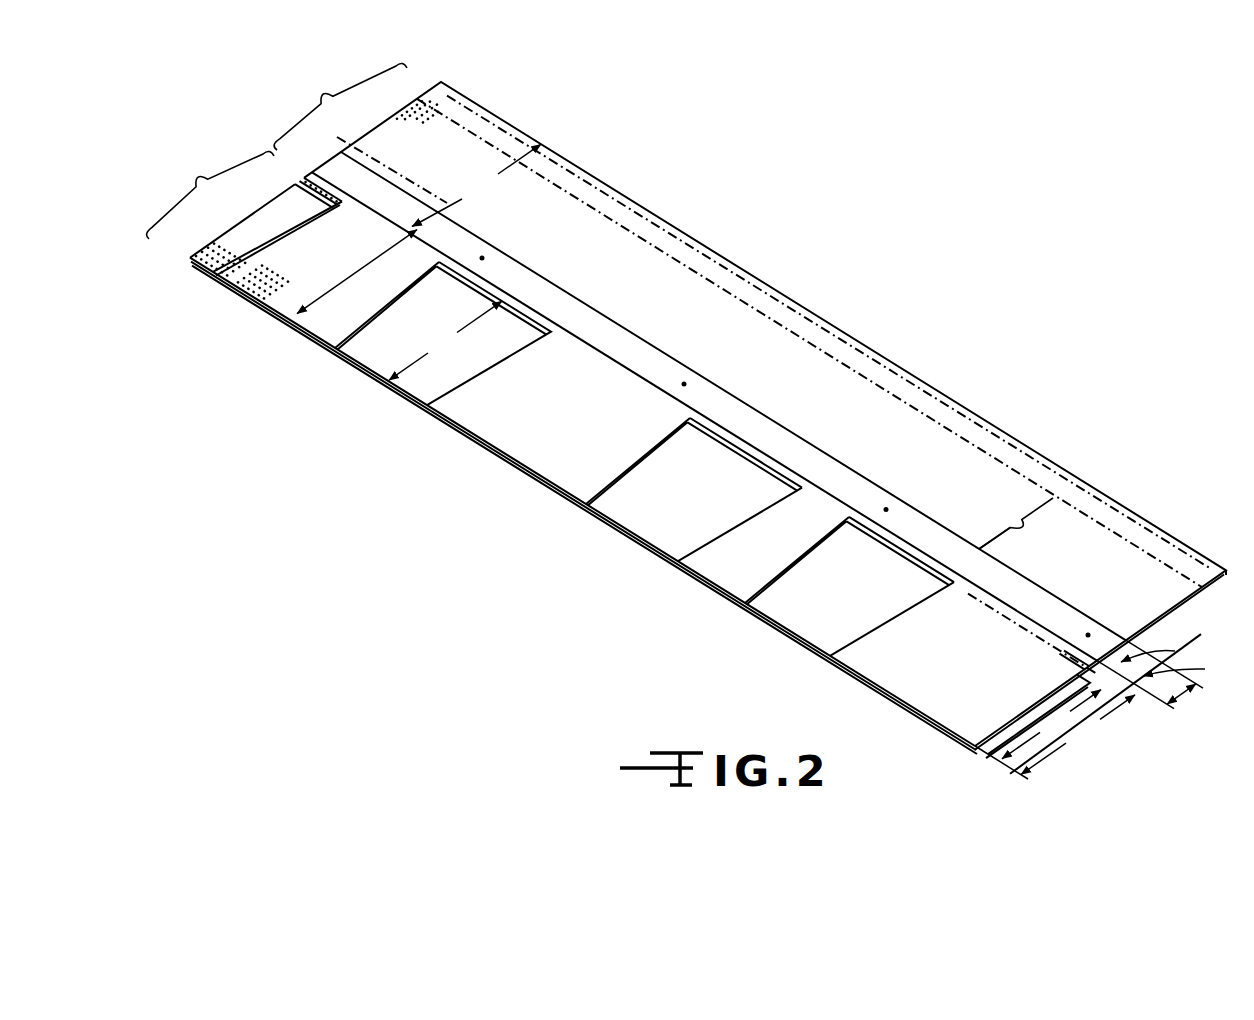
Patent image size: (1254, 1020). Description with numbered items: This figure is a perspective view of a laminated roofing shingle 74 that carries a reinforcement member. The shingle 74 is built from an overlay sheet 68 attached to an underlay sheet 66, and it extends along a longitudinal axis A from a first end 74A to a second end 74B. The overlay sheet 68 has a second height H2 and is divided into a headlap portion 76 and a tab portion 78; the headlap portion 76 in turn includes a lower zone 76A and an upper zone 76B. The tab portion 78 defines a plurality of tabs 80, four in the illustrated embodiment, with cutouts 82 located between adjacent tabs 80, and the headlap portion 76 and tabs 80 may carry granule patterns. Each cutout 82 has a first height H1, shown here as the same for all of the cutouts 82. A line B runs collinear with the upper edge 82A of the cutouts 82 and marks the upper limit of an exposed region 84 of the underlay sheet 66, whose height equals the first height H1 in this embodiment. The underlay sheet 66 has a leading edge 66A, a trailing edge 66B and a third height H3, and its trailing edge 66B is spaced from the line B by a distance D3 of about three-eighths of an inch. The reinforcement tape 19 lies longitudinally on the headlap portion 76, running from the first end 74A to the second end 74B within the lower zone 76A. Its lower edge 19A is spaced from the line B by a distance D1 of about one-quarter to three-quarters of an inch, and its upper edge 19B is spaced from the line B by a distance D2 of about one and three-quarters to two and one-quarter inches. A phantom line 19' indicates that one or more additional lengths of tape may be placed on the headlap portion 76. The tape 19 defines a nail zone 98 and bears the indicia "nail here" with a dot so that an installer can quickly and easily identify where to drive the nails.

The reinforcement tape 19 is at (727, 409).
The lower edge of the tape 19A is at (657, 388).
The upper edge of the tape 19B is at (695, 371).
The phantom line 19' is at (828, 332).
The underlay sheet 66 is at (194, 262).
The leading edge 66A is at (528, 470).
The trailing edge 66B is at (1131, 652).
The overlay sheet 68 is at (278, 314).
The laminated roofing shingle 74 is at (666, 129).
The first end 74A is at (389, 118).
The second end 74B is at (1228, 578).
The headlap portion 76 is at (340, 106).
The lower zone 76A is at (979, 547).
The upper zone 76B is at (1052, 497).
The tab portion 78 is at (210, 195).
The tabs 80 is at (322, 320).
The cutouts 82 is at (779, 612).
The upper edge of the cutouts 82A is at (896, 556).
The exposed region 84 is at (965, 670).
The nail zone 98 is at (305, 176).
The longitudinal axis A is at (404, 171).
The line B is at (1007, 615).
The distance D1 is at (1163, 649).
The distance D2 is at (1181, 704).
The distance D3 is at (1189, 668).
The first height H1 is at (445, 340).
The second height H2 is at (419, 228).
The third height H3 is at (1078, 735).